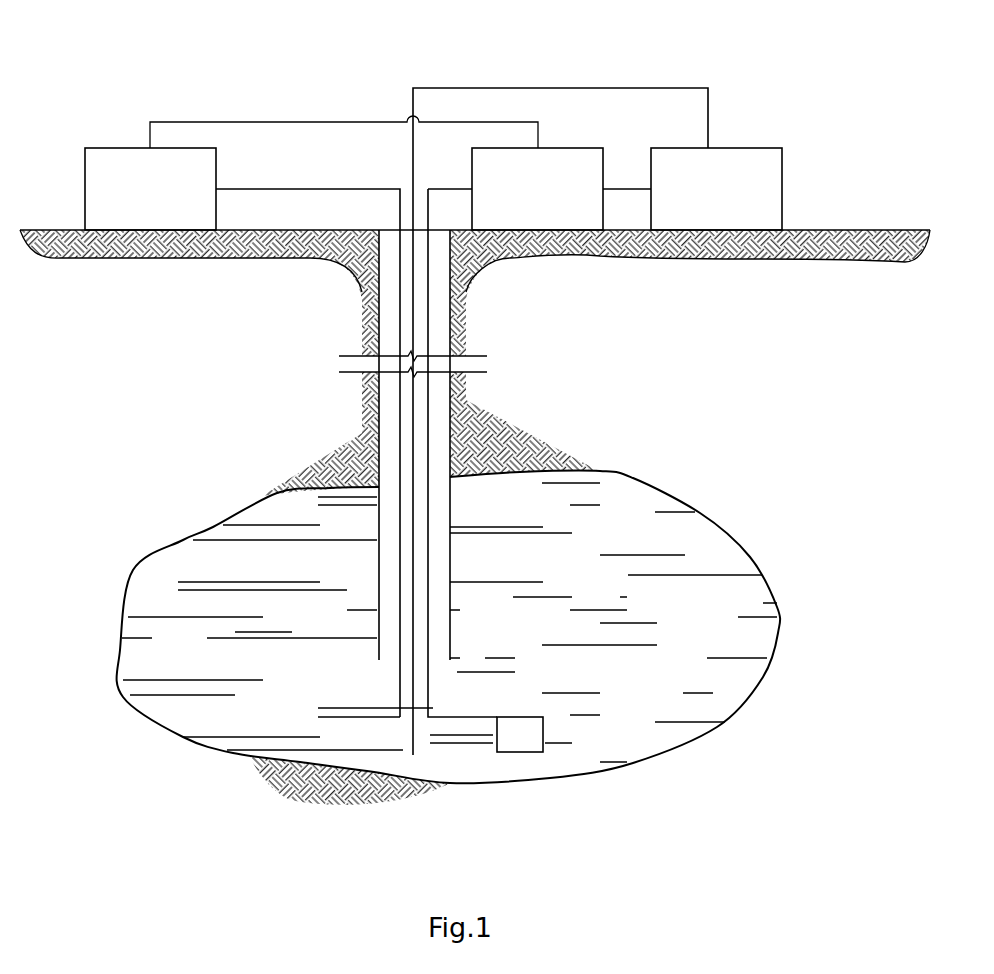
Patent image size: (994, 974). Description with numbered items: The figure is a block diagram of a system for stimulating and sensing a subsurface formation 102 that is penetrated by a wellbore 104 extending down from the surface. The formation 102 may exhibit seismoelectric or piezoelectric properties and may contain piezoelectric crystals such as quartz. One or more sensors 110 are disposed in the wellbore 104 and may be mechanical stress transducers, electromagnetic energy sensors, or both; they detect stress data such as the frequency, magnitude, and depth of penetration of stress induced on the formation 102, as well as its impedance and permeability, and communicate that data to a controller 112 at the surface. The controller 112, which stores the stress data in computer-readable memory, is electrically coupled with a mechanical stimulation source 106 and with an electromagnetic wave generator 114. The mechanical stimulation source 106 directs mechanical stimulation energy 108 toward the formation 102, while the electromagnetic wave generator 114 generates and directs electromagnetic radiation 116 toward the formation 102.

The formation 102 is at (617, 598).
The wellbore 104 is at (452, 310).
The mechanical stimulation source 106 is at (130, 203).
The mechanical stimulation energy 108 is at (269, 189).
The sensors 110 is at (518, 752).
The controller 112 is at (516, 203).
The electromagnetic wave generator 114 is at (695, 203).
The electromagnetic radiation 116 is at (657, 88).